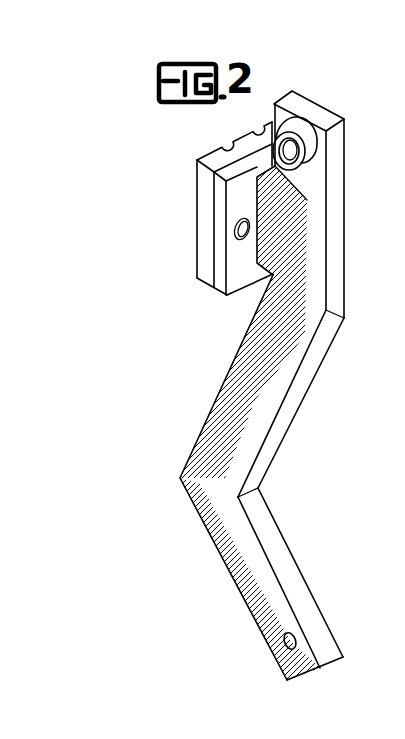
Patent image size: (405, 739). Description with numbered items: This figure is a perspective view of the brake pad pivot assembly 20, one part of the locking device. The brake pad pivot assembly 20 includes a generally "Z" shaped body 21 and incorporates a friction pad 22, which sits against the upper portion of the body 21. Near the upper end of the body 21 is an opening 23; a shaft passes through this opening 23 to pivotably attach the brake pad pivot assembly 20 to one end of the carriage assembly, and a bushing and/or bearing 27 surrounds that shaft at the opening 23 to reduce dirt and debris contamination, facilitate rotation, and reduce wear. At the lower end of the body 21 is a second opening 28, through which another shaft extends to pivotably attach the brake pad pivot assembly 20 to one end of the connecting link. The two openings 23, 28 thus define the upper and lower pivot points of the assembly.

The brake pad pivot assembly 20 is at (199, 356).
The body 21 is at (267, 422).
The friction pad 22 is at (198, 238).
The opening 23 is at (300, 150).
The bushing and/or bearing 27 is at (276, 169).
The opening 28 is at (292, 634).